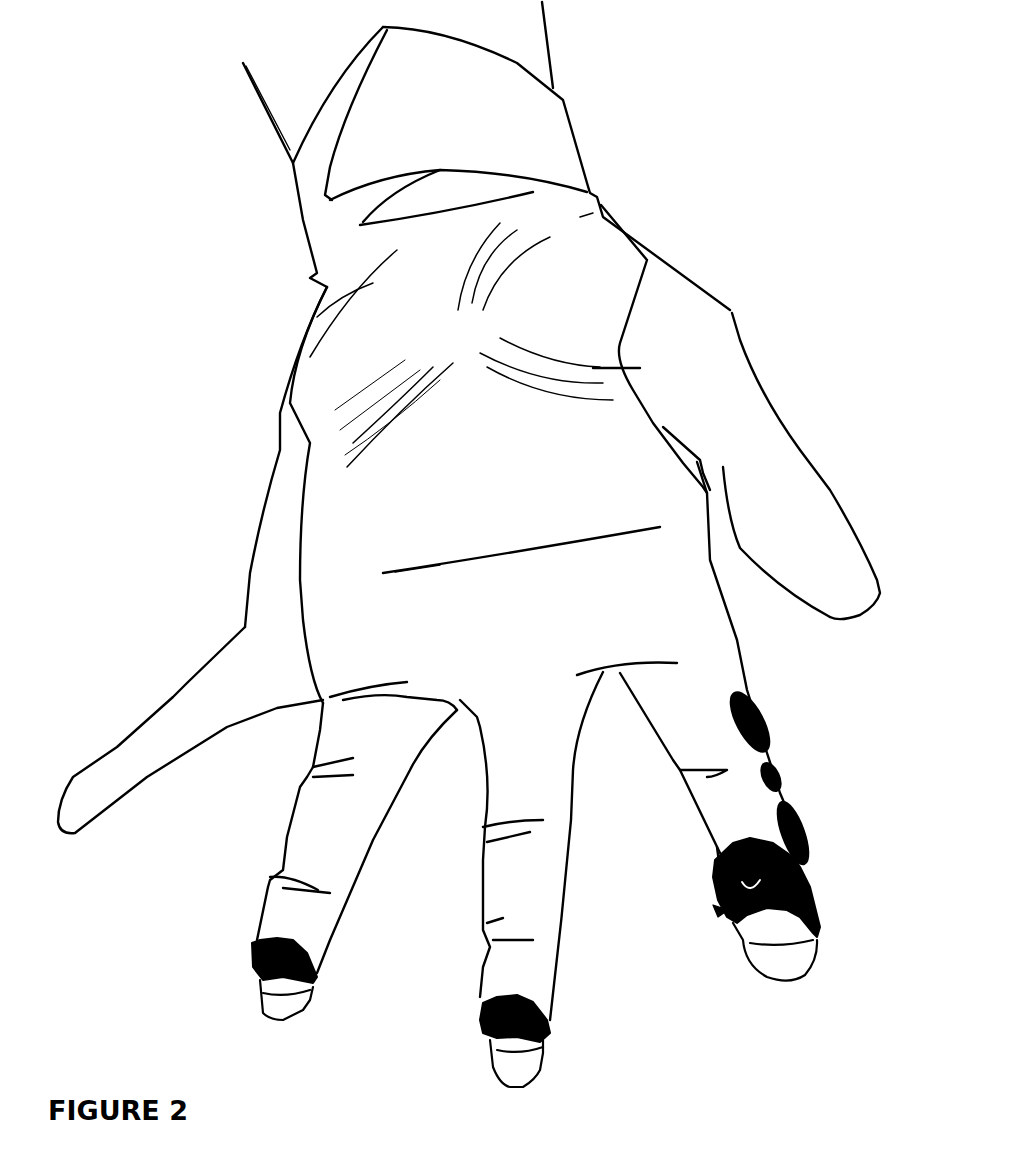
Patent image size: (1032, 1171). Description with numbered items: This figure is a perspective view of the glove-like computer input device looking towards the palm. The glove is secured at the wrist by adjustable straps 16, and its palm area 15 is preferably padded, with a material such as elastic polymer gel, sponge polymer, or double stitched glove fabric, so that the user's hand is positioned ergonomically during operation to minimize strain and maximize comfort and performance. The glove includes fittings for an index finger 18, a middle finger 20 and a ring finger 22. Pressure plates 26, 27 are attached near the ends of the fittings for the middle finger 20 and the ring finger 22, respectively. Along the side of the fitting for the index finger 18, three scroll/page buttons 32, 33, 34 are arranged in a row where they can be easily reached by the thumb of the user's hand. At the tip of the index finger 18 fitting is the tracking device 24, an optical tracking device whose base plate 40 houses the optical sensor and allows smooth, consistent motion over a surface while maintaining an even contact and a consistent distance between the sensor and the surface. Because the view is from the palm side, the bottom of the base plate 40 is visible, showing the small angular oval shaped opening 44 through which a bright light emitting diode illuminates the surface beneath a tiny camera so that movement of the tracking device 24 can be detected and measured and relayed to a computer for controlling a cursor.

The palm area 15 is at (515, 335).
The adjustable straps 16 is at (527, 123).
The index finger 18 is at (700, 827).
The middle finger 20 is at (483, 903).
The ring finger 22 is at (283, 847).
The tracking device 24 is at (718, 917).
The pressure plate 26 is at (547, 1027).
The pressure plate 27 is at (313, 977).
The scroll/page button 32 is at (782, 773).
The scroll/page button 33 is at (763, 713).
The scroll/page button 34 is at (807, 833).
The base plate 40 is at (800, 910).
The angular oval shaped opening 44 is at (750, 887).